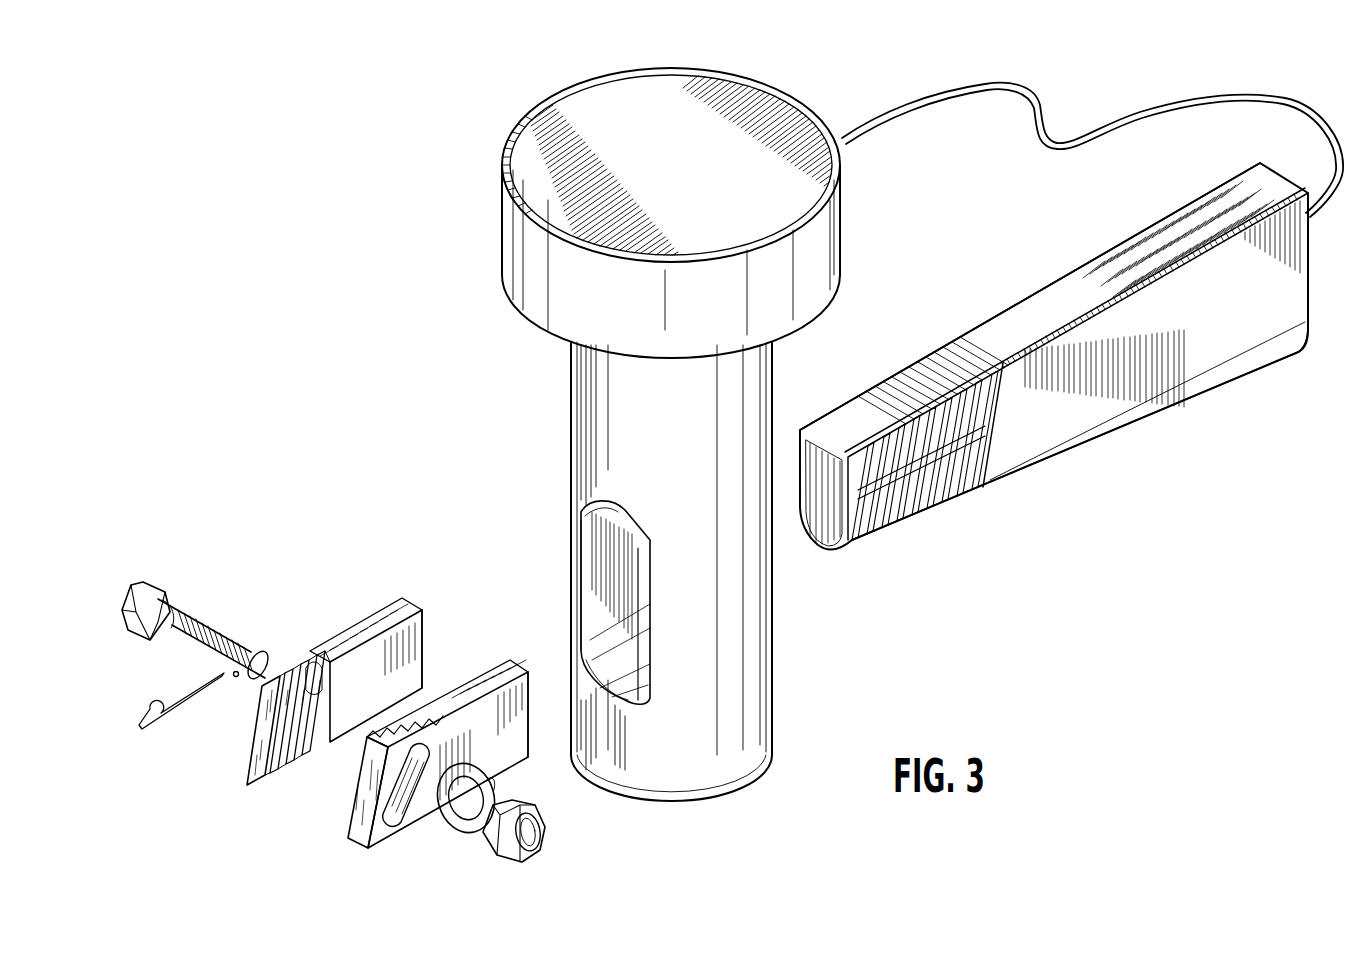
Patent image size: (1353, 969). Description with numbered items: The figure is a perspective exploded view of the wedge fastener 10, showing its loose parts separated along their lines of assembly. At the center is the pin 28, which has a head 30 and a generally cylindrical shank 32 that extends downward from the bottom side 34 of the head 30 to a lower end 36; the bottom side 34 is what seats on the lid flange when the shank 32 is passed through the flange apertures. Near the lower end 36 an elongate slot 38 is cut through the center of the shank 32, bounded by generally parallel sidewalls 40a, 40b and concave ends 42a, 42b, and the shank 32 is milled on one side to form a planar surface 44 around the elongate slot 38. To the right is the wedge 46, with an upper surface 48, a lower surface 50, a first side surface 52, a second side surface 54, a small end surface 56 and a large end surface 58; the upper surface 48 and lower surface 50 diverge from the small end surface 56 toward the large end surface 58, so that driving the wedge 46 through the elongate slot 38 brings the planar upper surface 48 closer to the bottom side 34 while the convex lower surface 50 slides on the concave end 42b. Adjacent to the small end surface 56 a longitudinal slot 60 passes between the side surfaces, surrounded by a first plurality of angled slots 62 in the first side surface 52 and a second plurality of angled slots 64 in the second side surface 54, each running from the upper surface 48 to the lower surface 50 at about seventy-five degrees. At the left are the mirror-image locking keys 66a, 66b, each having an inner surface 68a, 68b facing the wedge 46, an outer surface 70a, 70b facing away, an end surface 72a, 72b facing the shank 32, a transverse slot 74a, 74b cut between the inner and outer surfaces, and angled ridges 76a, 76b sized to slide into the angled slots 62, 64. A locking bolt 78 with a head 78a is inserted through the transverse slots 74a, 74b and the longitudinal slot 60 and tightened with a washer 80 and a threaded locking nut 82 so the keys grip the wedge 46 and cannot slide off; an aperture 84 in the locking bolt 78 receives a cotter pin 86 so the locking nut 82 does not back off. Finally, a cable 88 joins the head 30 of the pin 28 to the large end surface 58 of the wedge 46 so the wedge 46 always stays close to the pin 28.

The wedge fastener 10 is at (381, 116).
The pin 28 is at (641, 209).
The head 30 is at (562, 104).
The shank 32 is at (663, 585).
The bottom side 34 is at (536, 318).
The lower end 36 is at (706, 800).
The elongate slot 38 is at (592, 505).
The sidewall 40a is at (585, 530).
The sidewall 40b is at (640, 632).
The concave end 42a is at (616, 508).
The concave end 42b is at (612, 705).
The planar surface 44 is at (607, 765).
The wedge 46 is at (1066, 377).
The upper surface 48 is at (1235, 192).
The lower surface 50 is at (1140, 418).
The first side surface 52 is at (1236, 340).
The second side surface 54 is at (995, 318).
The small end surface 56 is at (818, 535).
The large end surface 58 is at (1312, 322).
The longitudinal slot 60 is at (978, 500).
The first plurality of angled slots 62 is at (957, 478).
The second plurality of angled slots 64 is at (904, 360).
The first locking key 66a is at (424, 745).
The second locking key 66b is at (325, 710).
The inner surface 68a is at (458, 686).
The inner surface 68b is at (380, 702).
The outer surface 70a is at (488, 752).
The outer surface 70b is at (348, 620).
The end surface 72a is at (532, 674).
The end surface 72b is at (452, 614).
The transverse slot 74a is at (400, 818).
The transverse slot 74b is at (312, 680).
The angled ridges 76a is at (350, 750).
The angled ridges 76b is at (270, 788).
The locking bolt 78 is at (197, 634).
The head 78a is at (172, 600).
The washer 80 is at (495, 790).
The threaded locking nut 82 is at (546, 830).
The aperture 84 is at (236, 679).
The cotter pin 86 is at (186, 696).
The cable 88 is at (1057, 95).